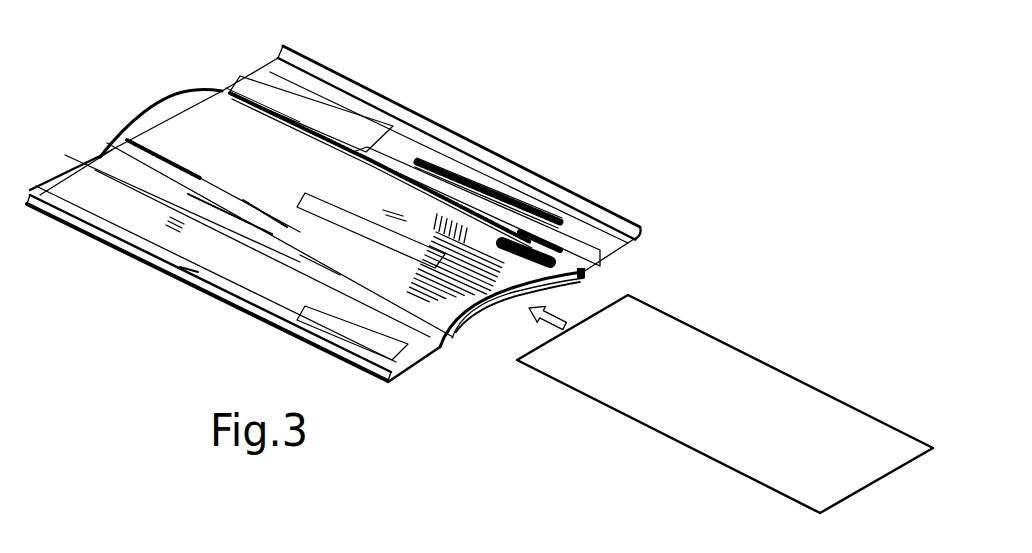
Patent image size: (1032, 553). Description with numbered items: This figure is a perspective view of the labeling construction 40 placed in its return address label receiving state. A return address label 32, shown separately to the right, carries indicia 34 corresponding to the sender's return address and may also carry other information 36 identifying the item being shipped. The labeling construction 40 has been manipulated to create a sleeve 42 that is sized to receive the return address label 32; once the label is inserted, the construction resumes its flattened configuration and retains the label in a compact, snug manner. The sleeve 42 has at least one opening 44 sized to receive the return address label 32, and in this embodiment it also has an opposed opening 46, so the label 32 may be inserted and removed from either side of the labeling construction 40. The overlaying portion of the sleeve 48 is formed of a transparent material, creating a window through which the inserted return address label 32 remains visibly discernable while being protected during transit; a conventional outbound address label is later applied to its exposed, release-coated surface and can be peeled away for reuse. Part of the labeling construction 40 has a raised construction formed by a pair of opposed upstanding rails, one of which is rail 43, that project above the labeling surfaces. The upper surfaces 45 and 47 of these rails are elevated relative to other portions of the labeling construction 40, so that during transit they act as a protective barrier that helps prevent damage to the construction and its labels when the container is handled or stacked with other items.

The return address label 32 is at (742, 361).
The indicia 34 is at (788, 460).
The information identifying the item being shipped 36 is at (658, 328).
The labeling construction 40 is at (545, 122).
The sleeve 42 is at (476, 291).
The upstanding rail 43 is at (642, 231).
The opening 44 is at (586, 273).
The upper surface 45 is at (160, 266).
The opposed opening 46 is at (172, 92).
The upper surface 47 is at (357, 84).
The overlaying portion of sleeve 48 is at (130, 118).